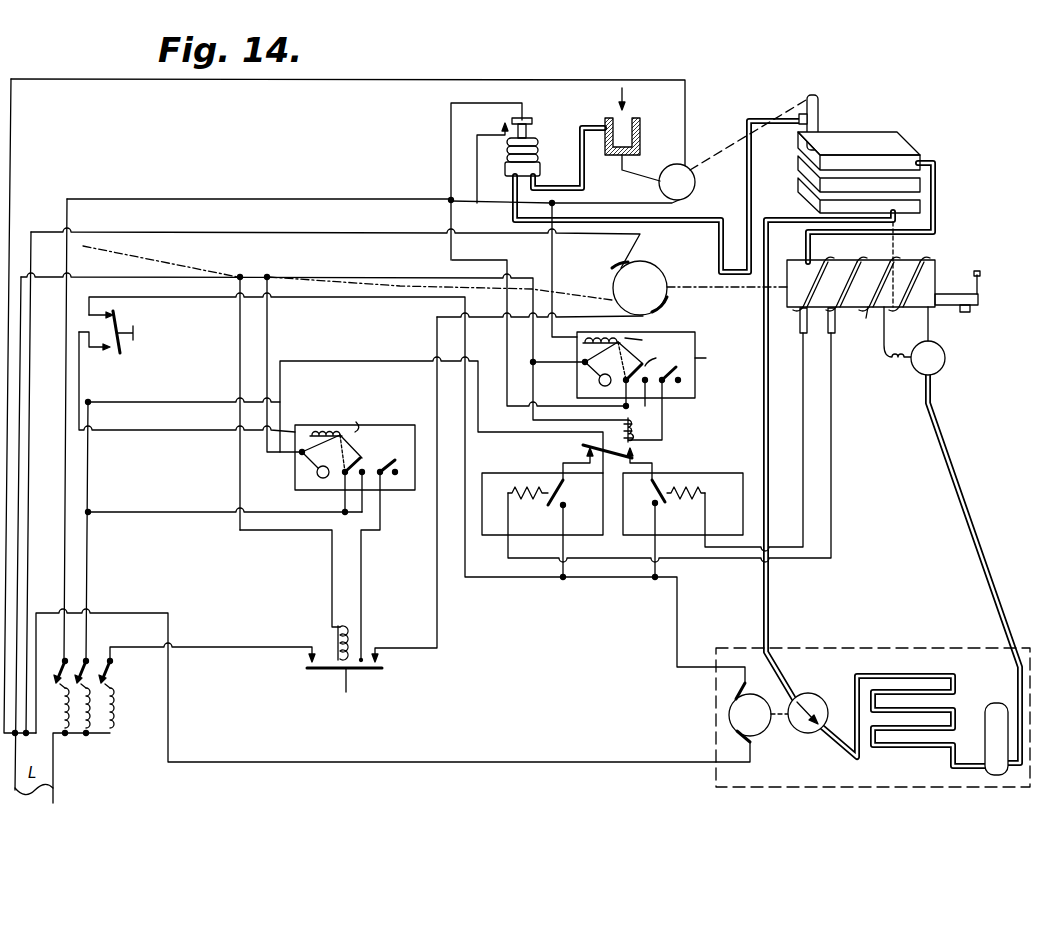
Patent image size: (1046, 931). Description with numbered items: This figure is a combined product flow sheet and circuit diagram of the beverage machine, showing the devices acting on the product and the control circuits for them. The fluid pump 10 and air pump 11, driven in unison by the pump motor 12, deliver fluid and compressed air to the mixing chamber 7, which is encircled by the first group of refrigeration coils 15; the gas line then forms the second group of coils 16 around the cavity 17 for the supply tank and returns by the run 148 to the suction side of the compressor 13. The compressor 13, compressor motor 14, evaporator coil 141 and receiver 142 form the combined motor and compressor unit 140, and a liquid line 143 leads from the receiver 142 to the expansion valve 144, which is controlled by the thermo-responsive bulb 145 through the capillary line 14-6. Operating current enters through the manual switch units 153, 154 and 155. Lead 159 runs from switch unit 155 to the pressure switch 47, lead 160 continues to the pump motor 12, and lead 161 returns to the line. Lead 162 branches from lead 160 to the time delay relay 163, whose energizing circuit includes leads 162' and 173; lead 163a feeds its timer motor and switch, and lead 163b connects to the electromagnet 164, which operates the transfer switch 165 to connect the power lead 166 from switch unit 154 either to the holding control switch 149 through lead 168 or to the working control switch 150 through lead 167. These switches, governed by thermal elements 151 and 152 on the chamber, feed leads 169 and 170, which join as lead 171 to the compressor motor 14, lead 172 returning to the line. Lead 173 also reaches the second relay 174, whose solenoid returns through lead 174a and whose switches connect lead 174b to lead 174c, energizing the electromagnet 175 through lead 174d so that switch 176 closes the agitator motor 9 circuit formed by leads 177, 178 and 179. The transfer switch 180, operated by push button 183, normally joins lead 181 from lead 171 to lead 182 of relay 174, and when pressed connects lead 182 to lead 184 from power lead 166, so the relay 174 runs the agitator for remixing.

The third lead 161 is at (383, 80).
The lead 159 is at (386, 199).
The lead 179 is at (300, 234).
The lead 173 is at (128, 278).
The lead 181 is at (352, 298).
The transfer switch 180 is at (122, 324).
The push button 183 is at (136, 337).
The lead 182 is at (180, 432).
The lead 184 is at (89, 473).
The time delay opening relay 174 is at (412, 422).
The lead 174a is at (268, 340).
The lead 174b is at (225, 498).
The lead 174c is at (381, 533).
The lead 174d is at (309, 574).
The power lead 166 is at (362, 361).
The electromagnet 175 is at (352, 632).
The switch 176 is at (360, 670).
The lead 177 is at (255, 647).
The lead 178 is at (438, 630).
The lead 172 is at (500, 762).
The lead 171 is at (678, 625).
The lead 170 is at (565, 580).
The lead 169 is at (660, 577).
The lead 168 is at (652, 468).
The lead 167 is at (597, 446).
The transfer switch 165 is at (634, 457).
The electromagnet 164 is at (636, 432).
The time delay opening relay 163 is at (693, 329).
The lead 163a is at (505, 406).
The lead 163b is at (668, 412).
The lead 162 is at (571, 270).
The lead 162' is at (559, 373).
The lead 160 is at (500, 203).
The pressure responsive electric switch 47 is at (538, 146).
The air pump 11 is at (642, 130).
The pump motor 12 is at (694, 160).
The fluid pump 10 is at (820, 116).
The cavity 17 is at (905, 150).
The second group of coils 16 is at (938, 188).
The thermo-responsive bulb 145 is at (898, 213).
The capillary line 14-6 is at (898, 246).
The first group of coils 15 is at (937, 270).
The mixing chamber 7 is at (887, 332).
The thermo-responsive control element 151 is at (800, 330).
The thermo-responsive control element 152 is at (835, 338).
The thermostatically responsive expansion valve 144 is at (946, 354).
The liquid line 143 is at (957, 466).
The working control switch 150 is at (502, 464).
The holding control switch 149 is at (698, 465).
The run 148 is at (768, 607).
The combined motor and compressor unit 140 is at (914, 648).
The compressor 13 is at (822, 696).
The compressor motor 14 is at (728, 712).
The evaporator coil 141 is at (905, 745).
The receiver 142 is at (996, 705).
The auger motor 9 is at (667, 297).
The combined manual switch and circuit breaker unit 155 is at (58, 660).
The combined manual switch and circuit breaker unit 154 is at (88, 655).
The combined manual switch and circuit breaker unit 153 is at (118, 668).